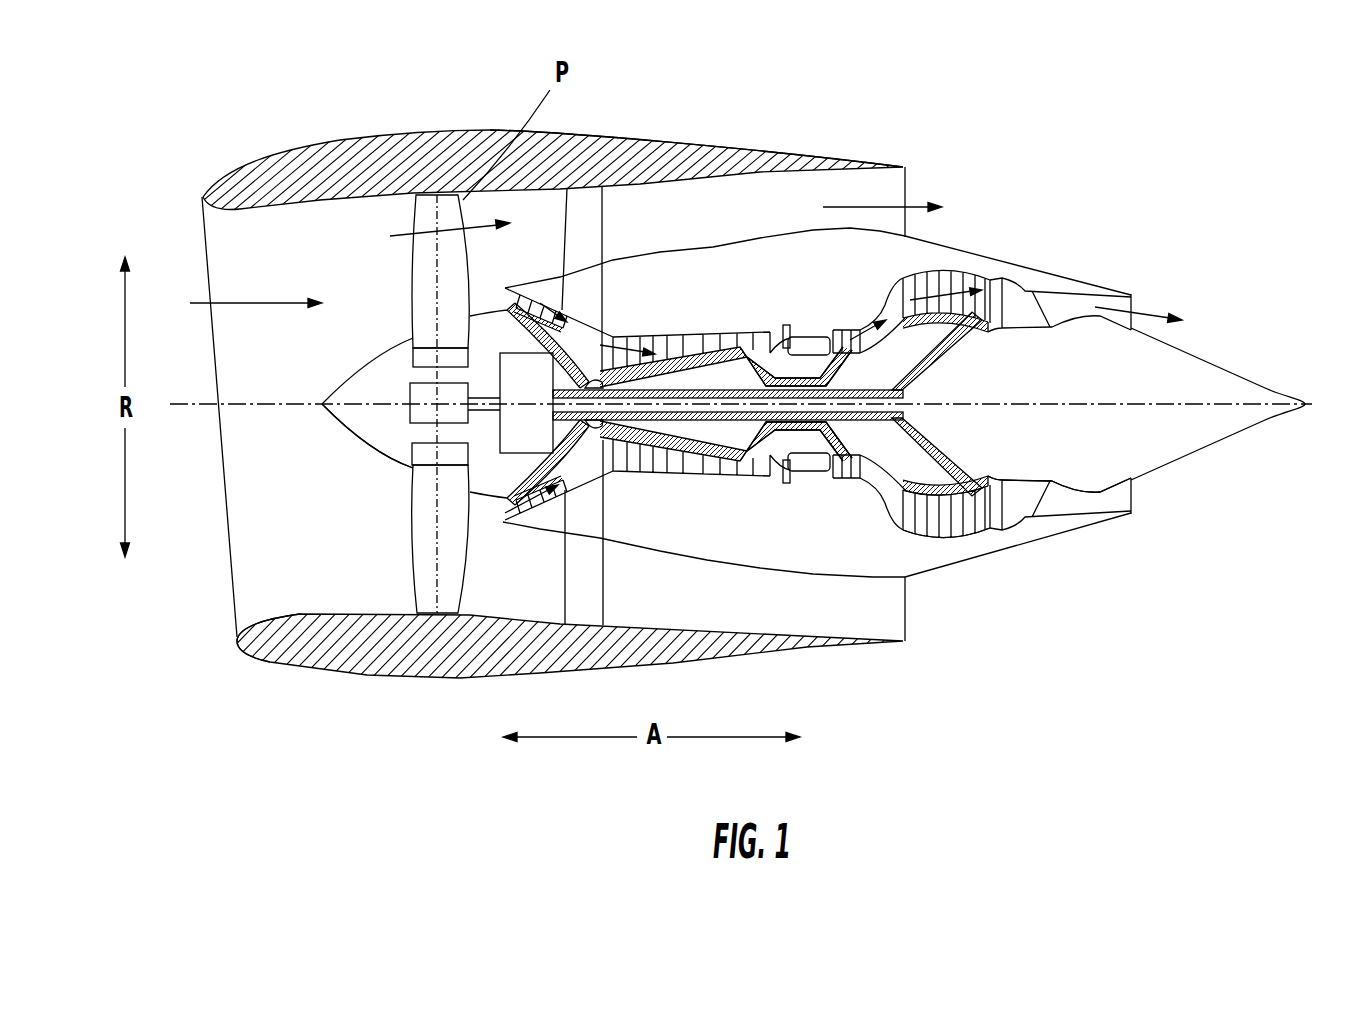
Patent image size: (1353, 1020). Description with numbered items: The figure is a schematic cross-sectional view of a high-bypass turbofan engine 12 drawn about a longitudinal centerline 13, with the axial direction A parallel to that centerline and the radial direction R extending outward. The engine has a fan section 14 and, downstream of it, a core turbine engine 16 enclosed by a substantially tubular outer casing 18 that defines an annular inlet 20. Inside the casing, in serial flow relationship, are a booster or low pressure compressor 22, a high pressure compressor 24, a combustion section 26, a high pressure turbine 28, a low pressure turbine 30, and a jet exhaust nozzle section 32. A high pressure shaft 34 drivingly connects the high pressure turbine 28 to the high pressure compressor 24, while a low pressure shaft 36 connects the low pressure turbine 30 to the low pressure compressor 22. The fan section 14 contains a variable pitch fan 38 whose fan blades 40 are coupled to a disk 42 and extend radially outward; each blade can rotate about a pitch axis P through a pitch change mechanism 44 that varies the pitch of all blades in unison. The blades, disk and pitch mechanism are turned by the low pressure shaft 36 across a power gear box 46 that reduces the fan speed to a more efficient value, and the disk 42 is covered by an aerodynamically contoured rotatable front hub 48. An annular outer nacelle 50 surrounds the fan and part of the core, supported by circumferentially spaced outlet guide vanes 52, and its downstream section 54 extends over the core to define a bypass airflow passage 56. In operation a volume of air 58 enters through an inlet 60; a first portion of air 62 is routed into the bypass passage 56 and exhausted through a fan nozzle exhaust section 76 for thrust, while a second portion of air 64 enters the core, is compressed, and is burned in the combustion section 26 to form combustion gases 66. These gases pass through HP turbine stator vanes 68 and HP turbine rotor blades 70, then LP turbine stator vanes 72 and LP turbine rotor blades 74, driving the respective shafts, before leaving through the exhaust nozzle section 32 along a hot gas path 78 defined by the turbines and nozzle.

The turbofan engine 12 is at (1049, 145).
The longitudinal centerline 13 is at (1073, 404).
The fan section 14 is at (371, 217).
The core turbine engine 16 is at (724, 293).
The outer casing 18 is at (760, 568).
The annular inlet 20 is at (503, 496).
The low pressure compressor 22 is at (553, 457).
The high pressure compressor 24 is at (630, 475).
The combustion section 26 is at (801, 480).
The high pressure turbine 28 is at (878, 479).
The low pressure turbine 30 is at (988, 535).
The jet exhaust nozzle section 32 is at (1055, 525).
The high pressure shaft 34 is at (837, 348).
The low pressure shaft 36 is at (925, 368).
The variable pitch fan 38 is at (378, 458).
The fan blades 40 is at (412, 555).
The disk 42 is at (433, 358).
The pitch change mechanism 44 is at (412, 387).
The power gear box 46 is at (588, 342).
The front hub 48 is at (333, 423).
The outer nacelle 50 is at (460, 677).
The outlet guide vanes 52 is at (600, 214).
The downstream section 54 is at (847, 157).
The bypass airflow passage 56 is at (753, 222).
The volume of air 58 is at (253, 302).
The inlet 60 is at (235, 617).
The first portion of air 62 is at (428, 232).
The second portion of air 64 is at (496, 293).
The combustion gases 66 is at (848, 338).
The HP turbine stator vanes 68 is at (820, 480).
The HP turbine rotor blades 70 is at (837, 457).
The LP turbine stator vanes 72 is at (912, 518).
The LP turbine rotor blades 74 is at (922, 520).
The fan nozzle exhaust section 76 is at (893, 192).
The hot gas path 78 is at (880, 300).